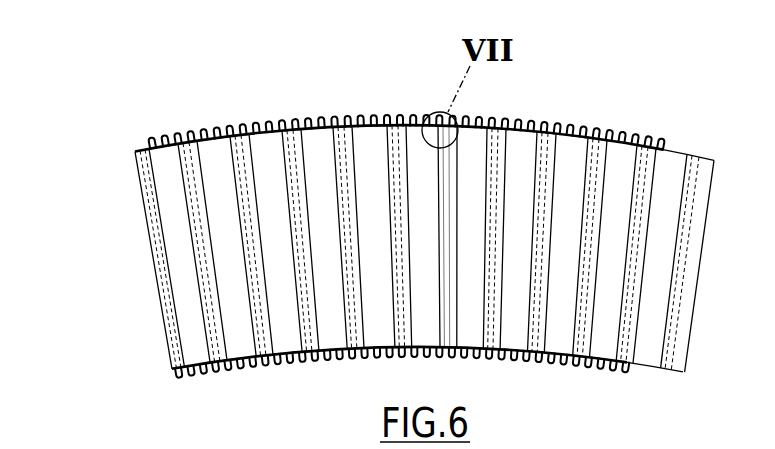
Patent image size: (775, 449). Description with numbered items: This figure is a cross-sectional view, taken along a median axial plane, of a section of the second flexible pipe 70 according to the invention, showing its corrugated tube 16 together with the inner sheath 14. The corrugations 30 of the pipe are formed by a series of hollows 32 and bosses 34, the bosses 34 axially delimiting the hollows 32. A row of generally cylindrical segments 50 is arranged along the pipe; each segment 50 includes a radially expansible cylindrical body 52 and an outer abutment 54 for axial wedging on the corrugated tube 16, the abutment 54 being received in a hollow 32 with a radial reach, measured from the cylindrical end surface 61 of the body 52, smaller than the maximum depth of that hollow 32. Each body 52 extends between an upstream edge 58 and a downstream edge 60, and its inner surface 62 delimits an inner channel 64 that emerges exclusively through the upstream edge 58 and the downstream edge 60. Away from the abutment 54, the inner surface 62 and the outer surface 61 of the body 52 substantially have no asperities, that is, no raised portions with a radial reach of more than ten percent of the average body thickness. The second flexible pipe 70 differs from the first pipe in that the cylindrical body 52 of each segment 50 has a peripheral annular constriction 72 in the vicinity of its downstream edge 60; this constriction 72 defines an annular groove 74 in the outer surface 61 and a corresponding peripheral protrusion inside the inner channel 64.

The inner sheath 14 is at (657, 380).
The corrugated tube 16 is at (654, 122).
The corrugations 30 is at (288, 123).
The hollows 32 is at (525, 155).
The bosses 34 is at (572, 143).
The segment 50 is at (193, 342).
The cylindrical body 52 is at (681, 162).
The outer abutment 54 is at (136, 150).
The upstream edge 58 is at (145, 212).
The downstream edge 60 is at (212, 216).
The outer surface 61 is at (627, 149).
The inner surface 62 is at (618, 152).
The inner channel 64 is at (364, 232).
The second flexible pipe 70 is at (651, 82).
The peripheral annular constriction 72 is at (706, 256).
The annular groove 74 is at (702, 156).